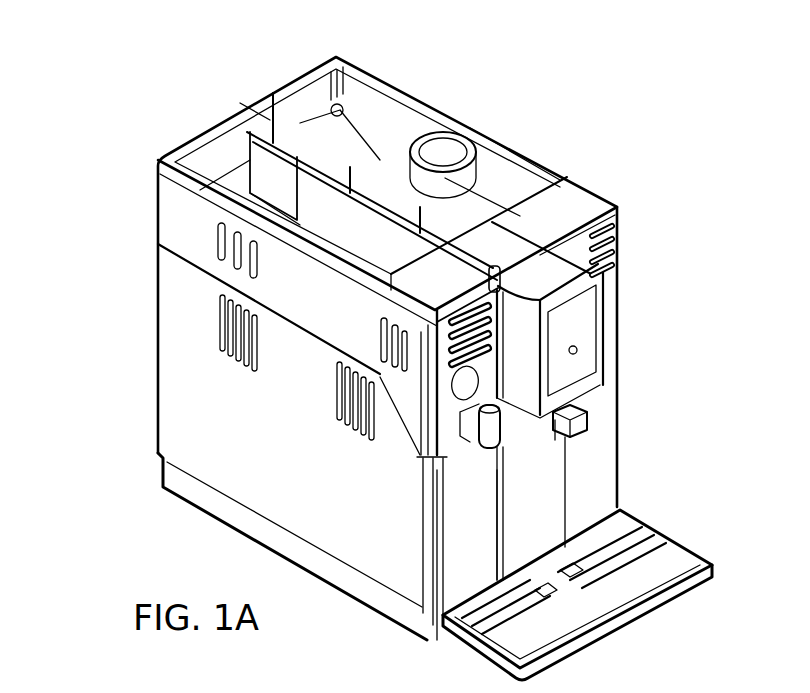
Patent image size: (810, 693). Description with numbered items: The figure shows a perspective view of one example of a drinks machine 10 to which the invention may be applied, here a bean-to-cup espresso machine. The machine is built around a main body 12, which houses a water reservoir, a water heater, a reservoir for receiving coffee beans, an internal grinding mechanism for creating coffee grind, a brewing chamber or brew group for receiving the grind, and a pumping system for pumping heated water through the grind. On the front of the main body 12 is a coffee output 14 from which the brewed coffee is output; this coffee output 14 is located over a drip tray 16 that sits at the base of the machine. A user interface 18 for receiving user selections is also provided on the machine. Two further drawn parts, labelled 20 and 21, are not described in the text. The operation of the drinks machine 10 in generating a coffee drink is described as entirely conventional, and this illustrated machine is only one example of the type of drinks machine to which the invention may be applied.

The drinks machine 10 is at (535, 105).
The main body 12 is at (163, 363).
The coffee output 14 is at (565, 433).
The drip tray 16 is at (678, 553).
The user interface 18 is at (631, 260).
The hot water / steam wand 20 is at (478, 442).
The front panel 21 is at (477, 510).